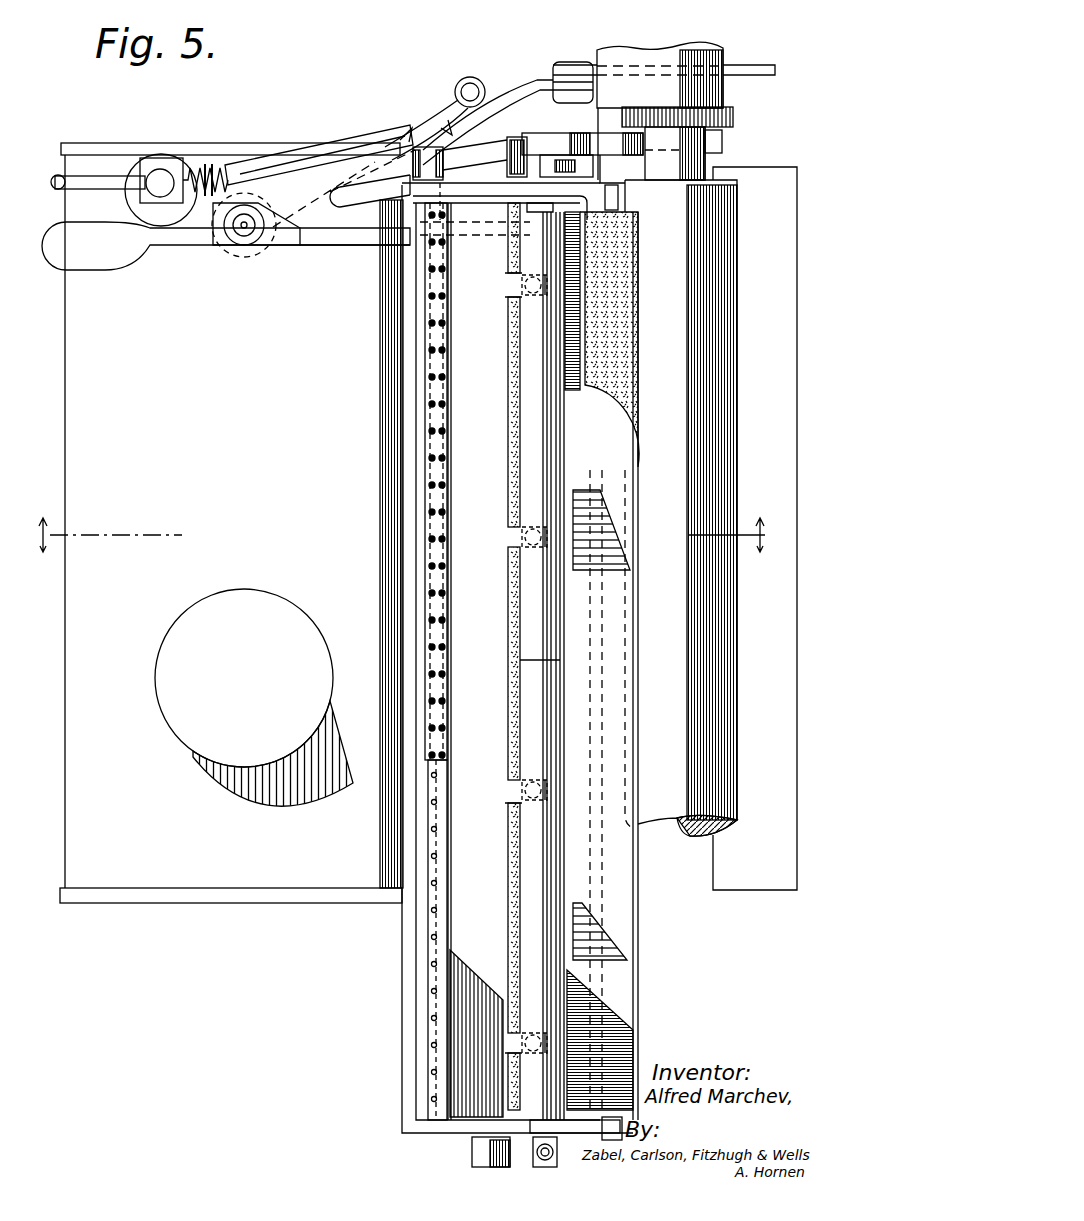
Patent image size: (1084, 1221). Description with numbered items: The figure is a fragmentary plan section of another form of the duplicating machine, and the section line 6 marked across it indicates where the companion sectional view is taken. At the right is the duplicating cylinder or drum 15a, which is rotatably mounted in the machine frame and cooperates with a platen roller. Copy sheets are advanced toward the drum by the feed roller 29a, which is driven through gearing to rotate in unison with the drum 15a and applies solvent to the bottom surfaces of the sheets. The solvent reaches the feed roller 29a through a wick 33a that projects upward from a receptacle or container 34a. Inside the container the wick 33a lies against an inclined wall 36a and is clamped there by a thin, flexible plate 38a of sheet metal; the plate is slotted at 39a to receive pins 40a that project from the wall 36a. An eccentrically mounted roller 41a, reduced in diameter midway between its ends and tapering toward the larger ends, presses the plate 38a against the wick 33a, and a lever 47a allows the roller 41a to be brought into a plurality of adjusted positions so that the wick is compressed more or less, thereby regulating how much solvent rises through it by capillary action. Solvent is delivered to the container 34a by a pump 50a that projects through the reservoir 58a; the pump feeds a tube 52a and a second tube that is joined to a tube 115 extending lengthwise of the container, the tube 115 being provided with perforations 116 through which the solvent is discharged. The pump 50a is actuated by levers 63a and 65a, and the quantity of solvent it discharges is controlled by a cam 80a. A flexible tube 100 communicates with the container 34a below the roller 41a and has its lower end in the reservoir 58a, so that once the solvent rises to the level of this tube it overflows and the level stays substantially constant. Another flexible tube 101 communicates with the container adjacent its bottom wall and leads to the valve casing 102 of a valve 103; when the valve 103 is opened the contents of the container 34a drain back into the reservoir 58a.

The section line 6 is at (401, 535).
The duplicating cylinder or drum 15a is at (777, 883).
The feed roller 29a is at (725, 797).
The wick 33a is at (610, 387).
The receptacle or container 34a is at (405, 940).
The inclined wall 36a is at (600, 965).
The thin plate 38a is at (613, 992).
The slot 39a is at (508, 297).
The pin 40a is at (522, 282).
The eccentrically mounted roller 41a is at (530, 876).
The lever 47a is at (533, 1154).
The pump 50a is at (244, 246).
The tube 52a is at (463, 90).
The reservoir 58a is at (80, 392).
The lever 63a is at (378, 244).
The lever 65a is at (760, 70).
The cam 80a is at (724, 141).
The flexible tube 100 is at (493, 170).
The flexible tube 101 is at (257, 163).
The valve casing 102 is at (183, 133).
The valve 103 is at (133, 168).
The tube 115 is at (448, 730).
The perforation 116 is at (447, 630).